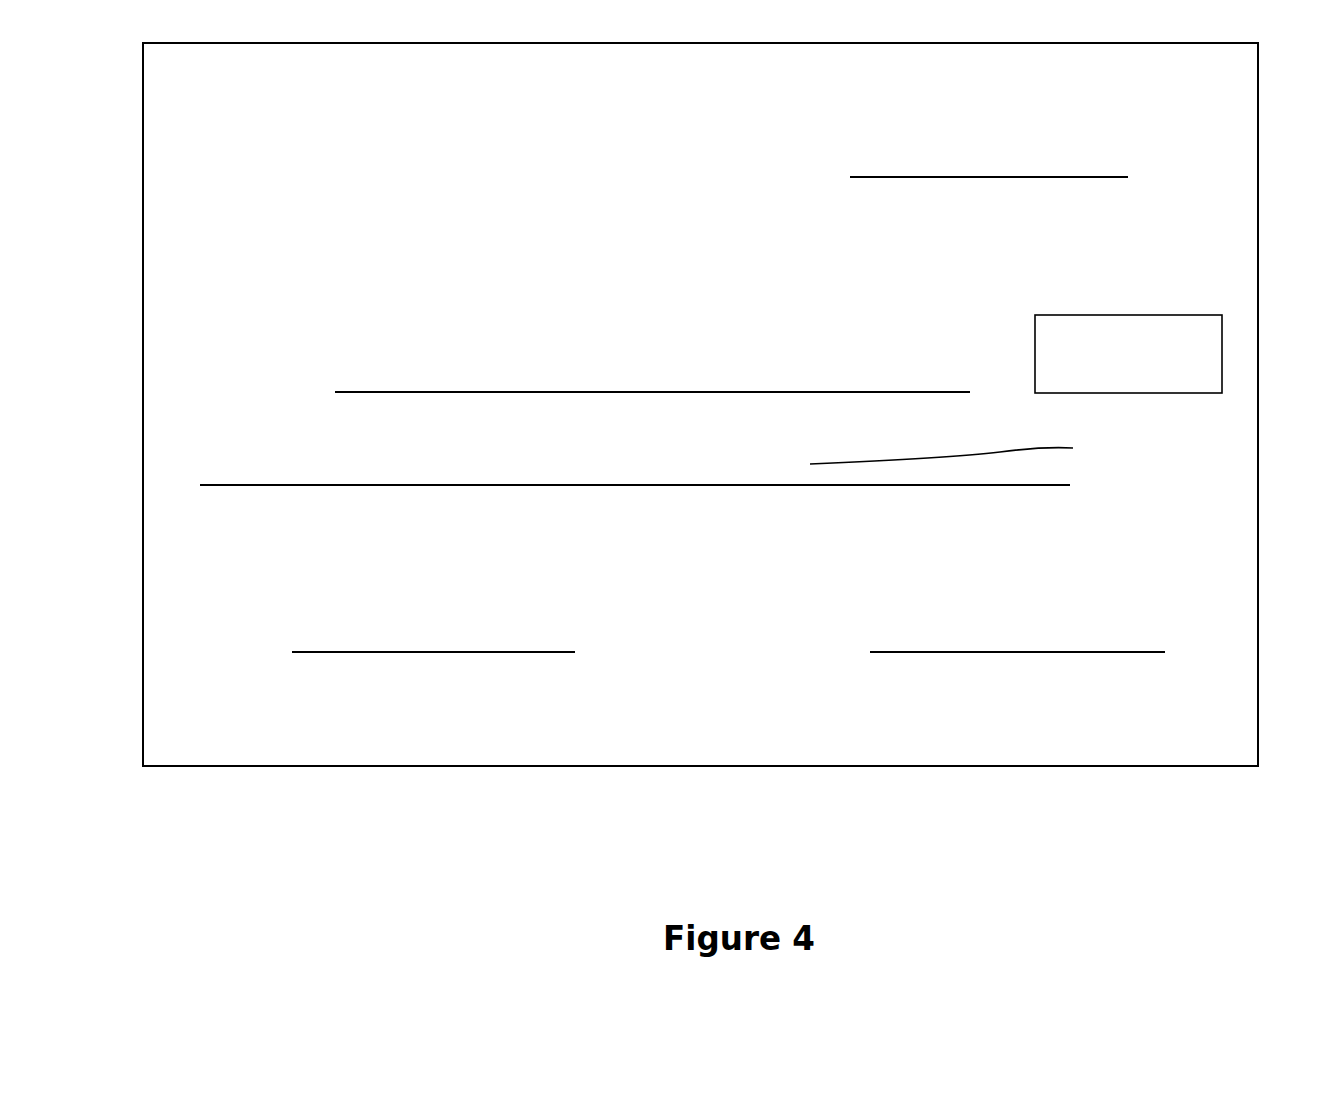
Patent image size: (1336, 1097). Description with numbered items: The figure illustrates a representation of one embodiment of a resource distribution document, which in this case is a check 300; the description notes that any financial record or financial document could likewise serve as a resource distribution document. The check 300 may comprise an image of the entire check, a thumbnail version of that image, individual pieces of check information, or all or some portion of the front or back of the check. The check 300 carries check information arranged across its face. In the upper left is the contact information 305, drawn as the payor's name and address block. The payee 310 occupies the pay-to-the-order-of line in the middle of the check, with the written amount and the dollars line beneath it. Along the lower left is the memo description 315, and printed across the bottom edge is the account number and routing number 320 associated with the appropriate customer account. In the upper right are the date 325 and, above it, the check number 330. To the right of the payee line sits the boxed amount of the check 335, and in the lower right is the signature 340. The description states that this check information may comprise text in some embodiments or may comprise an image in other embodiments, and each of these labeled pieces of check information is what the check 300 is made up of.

The check 300 is at (1143, 725).
The contact information 305 is at (172, 80).
The payee 310 is at (179, 320).
The memo description 315 is at (176, 595).
The account number and routing number 320 is at (790, 782).
The date 325 is at (774, 117).
The check number 330 is at (1130, 78).
The amount of the check 335 is at (1233, 302).
The signature 340 is at (1153, 580).